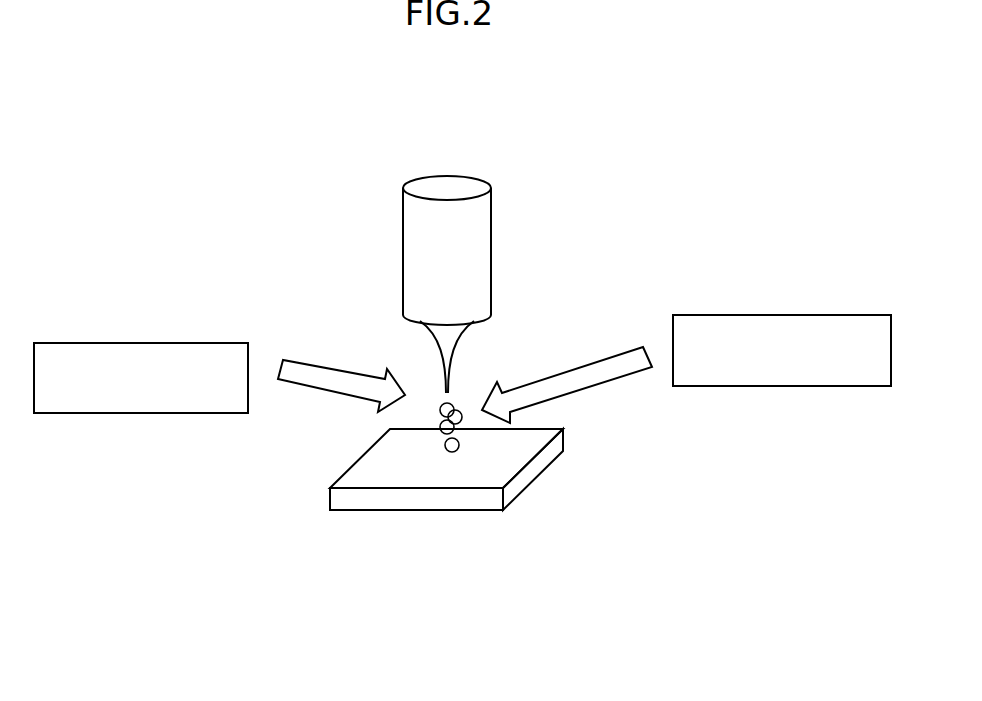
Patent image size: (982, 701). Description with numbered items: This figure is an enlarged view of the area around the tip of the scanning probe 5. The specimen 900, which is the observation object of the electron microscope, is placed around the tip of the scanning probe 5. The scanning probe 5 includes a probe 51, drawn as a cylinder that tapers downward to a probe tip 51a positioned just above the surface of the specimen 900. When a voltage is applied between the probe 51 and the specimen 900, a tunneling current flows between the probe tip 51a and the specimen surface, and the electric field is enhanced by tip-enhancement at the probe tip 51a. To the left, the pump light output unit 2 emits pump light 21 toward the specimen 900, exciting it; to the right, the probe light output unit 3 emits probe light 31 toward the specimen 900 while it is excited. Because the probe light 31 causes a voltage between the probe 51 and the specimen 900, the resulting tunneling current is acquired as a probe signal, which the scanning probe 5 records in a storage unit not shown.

The pump light output unit 2 is at (133, 342).
The probe light output unit 3 is at (715, 313).
The scanning probe 5 is at (387, 152).
The probe 51 is at (492, 225).
The probe tip 51a is at (452, 358).
The pump light 21 is at (297, 383).
The probe light 31 is at (610, 382).
The specimen 900 is at (443, 512).